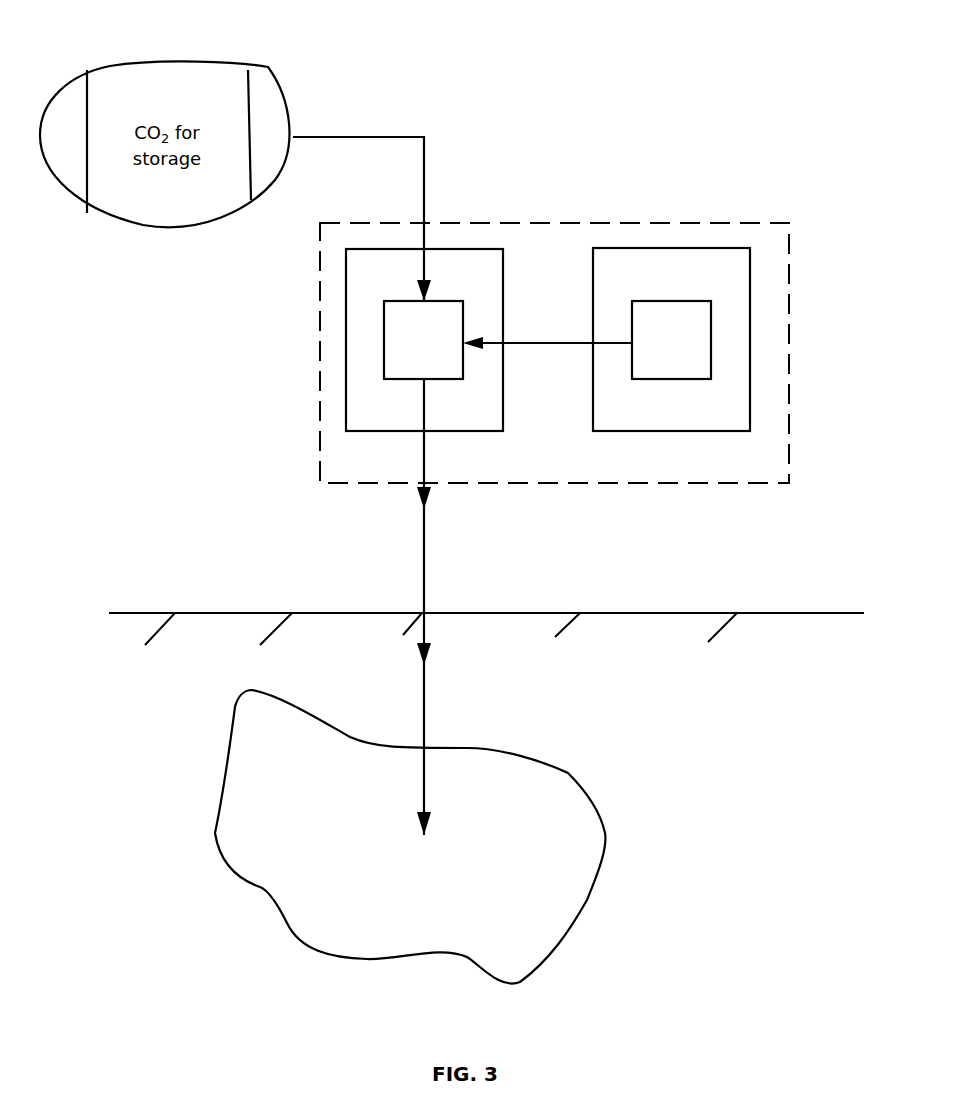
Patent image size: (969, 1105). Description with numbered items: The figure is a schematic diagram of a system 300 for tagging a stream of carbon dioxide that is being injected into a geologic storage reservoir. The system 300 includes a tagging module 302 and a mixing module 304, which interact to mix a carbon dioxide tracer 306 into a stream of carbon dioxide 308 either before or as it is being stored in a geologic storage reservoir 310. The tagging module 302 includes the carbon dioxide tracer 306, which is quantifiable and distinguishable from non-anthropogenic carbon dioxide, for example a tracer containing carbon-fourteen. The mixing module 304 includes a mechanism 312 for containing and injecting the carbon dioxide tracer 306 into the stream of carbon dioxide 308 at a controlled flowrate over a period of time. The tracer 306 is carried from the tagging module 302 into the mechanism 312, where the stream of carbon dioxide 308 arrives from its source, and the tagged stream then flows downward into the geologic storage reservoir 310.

The system 300 is at (790, 262).
The tagging module 302 is at (670, 248).
The mixing module 304 is at (472, 248).
The carbon dioxide tracer 306 is at (685, 379).
The stream of carbon dioxide 308 is at (368, 137).
The geologic storage reservoir 310 is at (410, 837).
The mechanism 312 is at (384, 352).